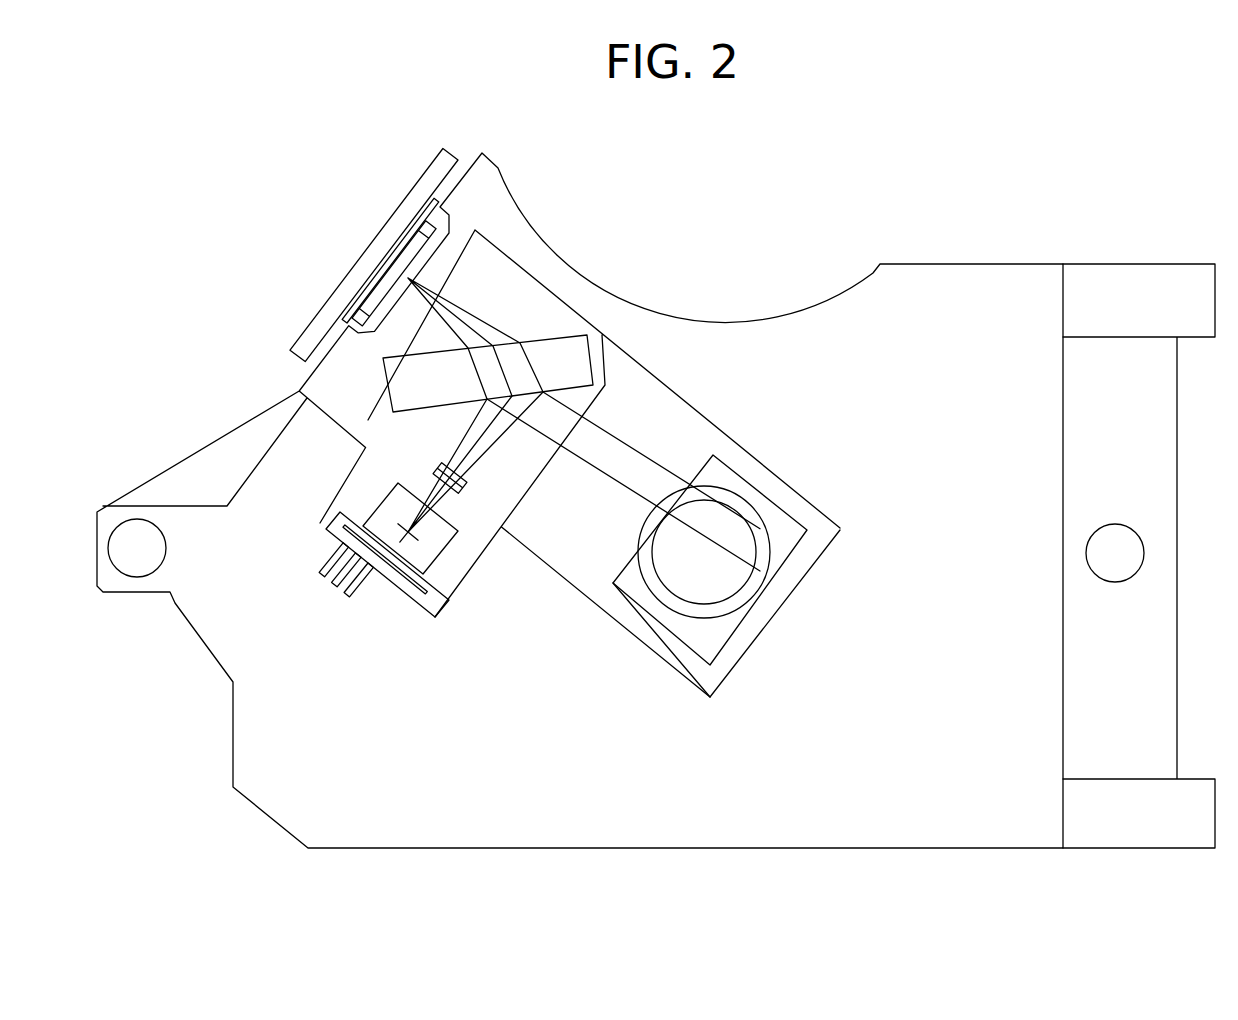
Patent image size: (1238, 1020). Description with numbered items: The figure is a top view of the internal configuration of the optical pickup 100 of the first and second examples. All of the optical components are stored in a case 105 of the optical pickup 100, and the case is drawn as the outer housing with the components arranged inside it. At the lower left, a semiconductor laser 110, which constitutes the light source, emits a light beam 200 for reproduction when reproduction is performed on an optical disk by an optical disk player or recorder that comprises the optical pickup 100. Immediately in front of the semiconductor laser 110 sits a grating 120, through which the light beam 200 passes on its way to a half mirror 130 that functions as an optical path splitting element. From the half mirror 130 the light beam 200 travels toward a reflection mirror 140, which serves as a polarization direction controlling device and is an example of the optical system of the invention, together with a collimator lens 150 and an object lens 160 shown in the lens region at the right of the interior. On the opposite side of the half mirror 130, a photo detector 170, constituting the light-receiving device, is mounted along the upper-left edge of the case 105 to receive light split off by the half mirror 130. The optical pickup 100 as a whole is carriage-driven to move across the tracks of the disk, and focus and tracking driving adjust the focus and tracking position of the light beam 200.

The optical pickup 100 is at (258, 457).
The case 105 is at (643, 848).
The semiconductor laser 110 is at (421, 596).
The grating 120 is at (472, 492).
The half mirror 130 is at (562, 352).
The reflection mirror 140 is at (787, 543).
The collimator lens 150 is at (728, 498).
The object lens 160 is at (740, 547).
The photo detector 170 is at (401, 222).
The light beam 200 is at (568, 486).